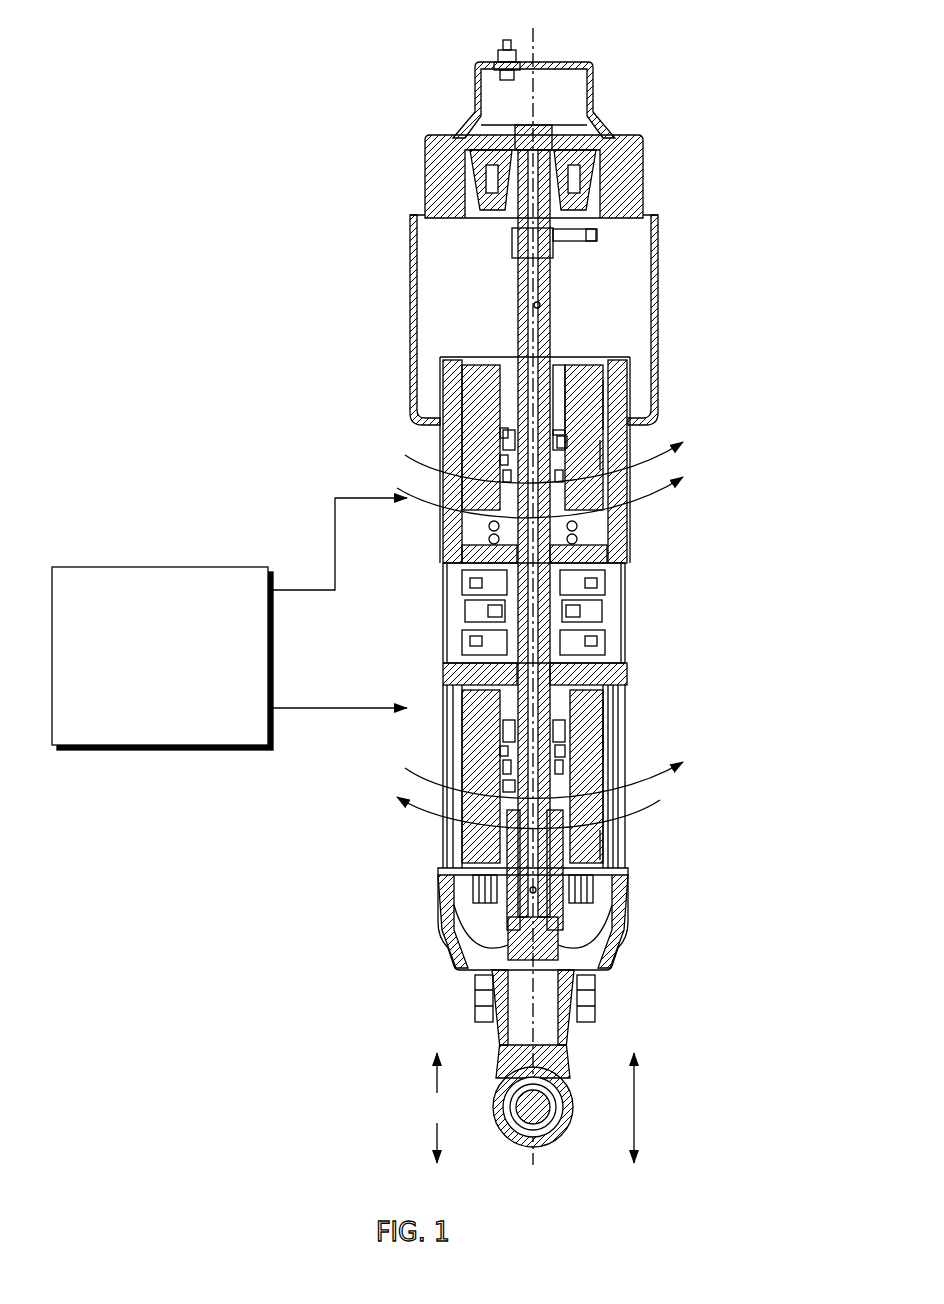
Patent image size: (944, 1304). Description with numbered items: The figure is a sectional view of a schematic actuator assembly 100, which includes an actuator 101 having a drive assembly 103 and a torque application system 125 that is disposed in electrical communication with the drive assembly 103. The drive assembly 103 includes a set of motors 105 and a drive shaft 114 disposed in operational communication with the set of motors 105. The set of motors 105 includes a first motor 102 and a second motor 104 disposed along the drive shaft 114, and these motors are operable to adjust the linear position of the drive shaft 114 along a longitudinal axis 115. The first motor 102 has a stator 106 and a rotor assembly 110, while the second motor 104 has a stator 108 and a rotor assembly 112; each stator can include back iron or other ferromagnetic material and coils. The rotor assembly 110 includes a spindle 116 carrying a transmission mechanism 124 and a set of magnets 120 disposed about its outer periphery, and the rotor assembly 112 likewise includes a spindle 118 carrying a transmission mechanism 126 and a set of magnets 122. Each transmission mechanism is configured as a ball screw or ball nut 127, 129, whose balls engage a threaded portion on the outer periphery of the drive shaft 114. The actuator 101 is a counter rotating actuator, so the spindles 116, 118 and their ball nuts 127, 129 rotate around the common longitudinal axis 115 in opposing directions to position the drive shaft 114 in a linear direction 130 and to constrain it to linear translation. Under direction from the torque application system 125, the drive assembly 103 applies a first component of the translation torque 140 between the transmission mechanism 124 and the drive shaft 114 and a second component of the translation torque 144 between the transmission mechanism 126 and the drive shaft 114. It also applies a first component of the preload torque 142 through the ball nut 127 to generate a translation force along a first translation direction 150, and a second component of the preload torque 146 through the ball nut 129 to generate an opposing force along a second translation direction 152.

The actuator assembly 100 is at (378, 50).
The actuator 101 is at (630, 107).
The drive assembly 103 is at (632, 248).
The drive shaft 114 is at (552, 300).
The longitudinal axis 115 is at (530, 290).
The ball nut 127 is at (557, 383).
The set of motors 105 is at (617, 352).
The first motor 102 is at (613, 402).
The set of magnets 120 is at (562, 442).
The stator 106 is at (605, 440).
The first component of the preload torque 142 is at (660, 468).
The first component of the translation torque 140 is at (657, 495).
The spindle 116 is at (495, 377).
The rotor assembly 110 is at (492, 432).
The transmission mechanism 124 is at (497, 458).
The torque application system 125 is at (90, 567).
The ball nut 129 is at (557, 747).
The second motor 104 is at (617, 733).
The set of magnets 122 is at (593, 752).
The second component of the preload torque 146 is at (662, 780).
The second component of the translation torque 144 is at (660, 808).
The stator 108 is at (597, 848).
The transmission mechanism 126 is at (498, 752).
The rotor assembly 112 is at (520, 777).
The spindle 118 is at (497, 858).
The first translation direction 150 is at (437, 1076).
The second translation direction 152 is at (437, 1135).
The linear direction 130 is at (634, 1105).